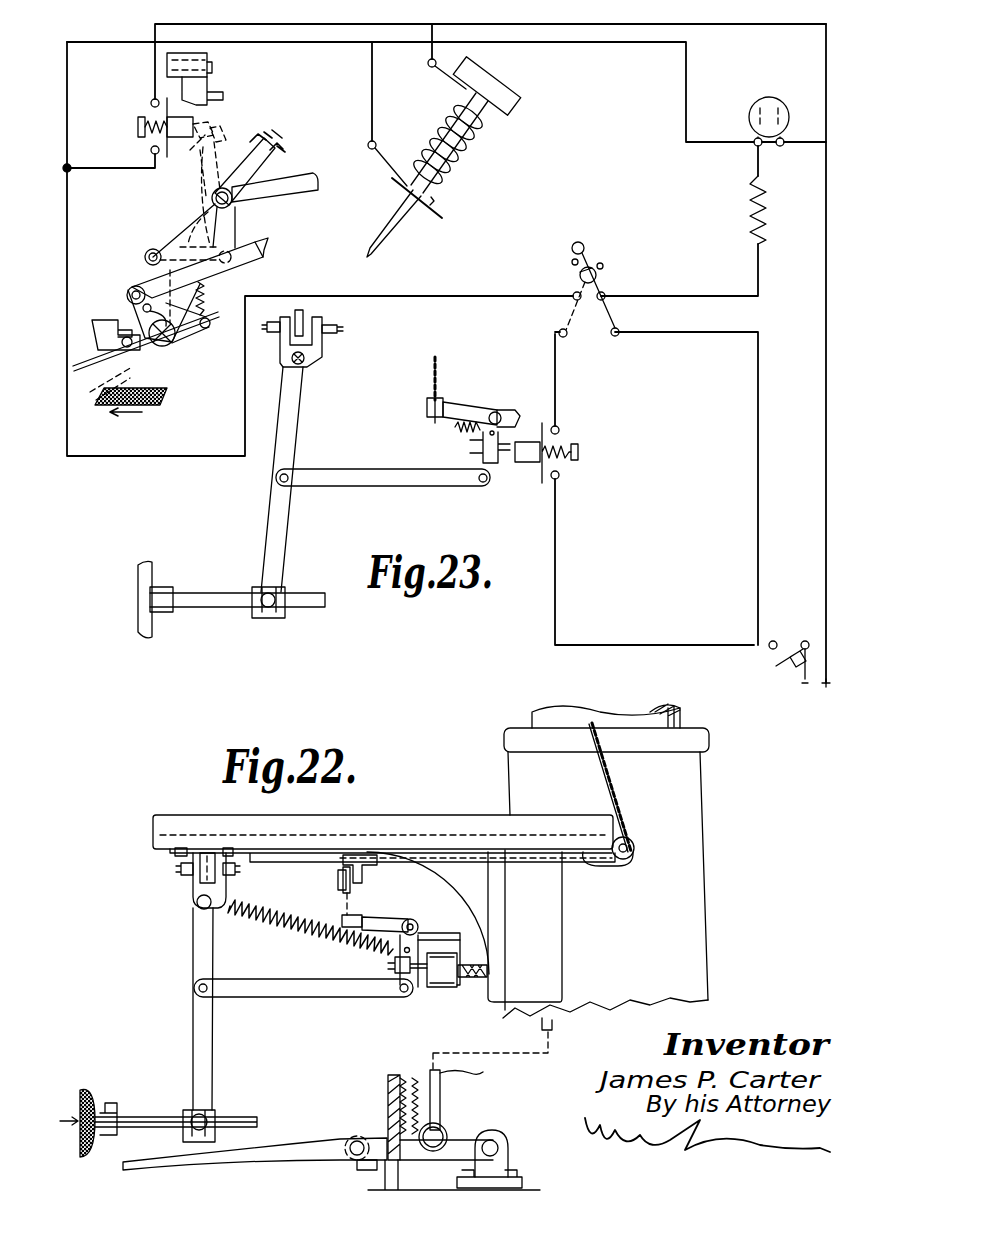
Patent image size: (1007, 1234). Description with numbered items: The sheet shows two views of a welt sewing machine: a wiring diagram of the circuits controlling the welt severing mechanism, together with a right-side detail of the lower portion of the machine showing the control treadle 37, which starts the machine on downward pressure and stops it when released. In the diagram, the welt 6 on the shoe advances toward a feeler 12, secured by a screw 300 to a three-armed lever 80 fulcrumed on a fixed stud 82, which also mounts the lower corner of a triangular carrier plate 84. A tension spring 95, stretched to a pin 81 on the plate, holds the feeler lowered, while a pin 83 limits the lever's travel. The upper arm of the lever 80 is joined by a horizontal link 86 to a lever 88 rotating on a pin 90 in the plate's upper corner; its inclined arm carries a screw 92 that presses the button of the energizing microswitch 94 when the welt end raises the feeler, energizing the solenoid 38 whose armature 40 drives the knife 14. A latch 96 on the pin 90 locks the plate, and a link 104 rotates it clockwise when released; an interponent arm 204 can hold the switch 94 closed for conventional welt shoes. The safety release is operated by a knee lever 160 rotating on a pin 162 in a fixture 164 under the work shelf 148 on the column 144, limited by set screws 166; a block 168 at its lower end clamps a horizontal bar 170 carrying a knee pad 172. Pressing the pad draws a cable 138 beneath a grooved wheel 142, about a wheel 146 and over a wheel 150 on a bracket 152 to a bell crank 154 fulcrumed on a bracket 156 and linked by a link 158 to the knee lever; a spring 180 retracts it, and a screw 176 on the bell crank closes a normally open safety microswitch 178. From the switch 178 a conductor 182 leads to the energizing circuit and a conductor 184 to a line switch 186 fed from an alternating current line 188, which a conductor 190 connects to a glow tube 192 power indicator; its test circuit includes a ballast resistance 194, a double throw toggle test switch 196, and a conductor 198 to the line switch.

In FIG. 23, the welt 6 is at (163, 398).
In FIG. 23, the feeler 12 is at (96, 360).
In FIG. 23, the welt severing knife 14 is at (409, 218).
In FIG. 22, the control treadle 37 is at (143, 1162).
In FIG. 23, the electromagnetic solenoid 38 is at (458, 156).
In FIG. 23, the armature 40 is at (485, 116).
In FIG. 23, the three-armed lever 80 is at (140, 360).
In FIG. 23, the pin 81 is at (148, 252).
In FIG. 23, the fixed stud 82 is at (172, 342).
In FIG. 23, the pin 83 is at (210, 326).
In FIG. 23, the carrier plate 84 is at (130, 280).
In FIG. 23, the horizontal link 86 is at (183, 232).
In FIG. 23, the lever 88 is at (243, 168).
In FIG. 23, the pin 90 is at (232, 208).
In FIG. 23, the screw 92 is at (262, 127).
In FIG. 23, the solenoid energizing microswitch 94 is at (172, 140).
In FIG. 23, the tension spring 95 is at (206, 298).
In FIG. 23, the latch 96 is at (290, 198).
In FIG. 23, the link 104 is at (266, 250).
In FIG. 23, the cable 138 is at (437, 367).
In FIG. 22, the cable 138 is at (618, 780).
In FIG. 22, the grooved wheel 142 is at (634, 845).
In FIG. 22, the supporting column 144 is at (705, 893).
In FIG. 22, the grooved wheel 146 is at (362, 910).
In FIG. 22, the work shelf 148 is at (403, 813).
In FIG. 22, the grooved wheel 150 is at (337, 892).
In FIG. 22, the bracket 152 is at (343, 858).
In FIG. 23, the bell crank 154 is at (470, 410).
In FIG. 22, the bell crank 154 is at (380, 906).
In FIG. 23, the bracket 156 is at (514, 408).
In FIG. 22, the bracket 156 is at (446, 905).
In FIG. 23, the link 158 is at (335, 482).
In FIG. 22, the link 158 is at (280, 1000).
In FIG. 23, the knee lever 160 is at (290, 430).
In FIG. 22, the knee lever 160 is at (206, 1054).
In FIG. 23, the pin 162 is at (308, 364).
In FIG. 22, the pin 162 is at (197, 905).
In FIG. 23, the fixture 164 is at (305, 312).
In FIG. 22, the fixture 164 is at (192, 884).
In FIG. 23, the set screws 166 is at (266, 320).
In FIG. 22, the set screws 166 is at (176, 866).
In FIG. 23, the block 168 is at (282, 585).
In FIG. 22, the block 168 is at (215, 1108).
In FIG. 23, the horizontal bar 170 is at (208, 600).
In FIG. 22, the horizontal bar 170 is at (155, 1117).
In FIG. 23, the knee pad 172 is at (140, 580).
In FIG. 22, the knee pad 172 is at (88, 1088).
In FIG. 23, the switch actuating screw 176 is at (470, 450).
In FIG. 22, the switch actuating screw 176 is at (388, 967).
In FIG. 23, the safety microswitch 178 is at (527, 462).
In FIG. 22, the safety microswitch 178 is at (440, 990).
In FIG. 23, the tension spring 180 is at (453, 428).
In FIG. 22, the tension spring 180 is at (275, 928).
In FIG. 23, the conductor 182 is at (558, 384).
In FIG. 23, the conductor 184 is at (558, 544).
In FIG. 23, the line switch 186 is at (780, 668).
In FIG. 23, the alternating current line 188 is at (818, 688).
In FIG. 23, the conductor 190 is at (824, 503).
In FIG. 23, the glow tube 192 is at (776, 110).
In FIG. 23, the ballast resistance 194 is at (752, 207).
In FIG. 23, the test switch 196 is at (600, 276).
In FIG. 23, the conductor 198 is at (756, 409).
In FIG. 23, the interponent arm 204 is at (210, 84).
In FIG. 23, the screw 300 is at (128, 300).